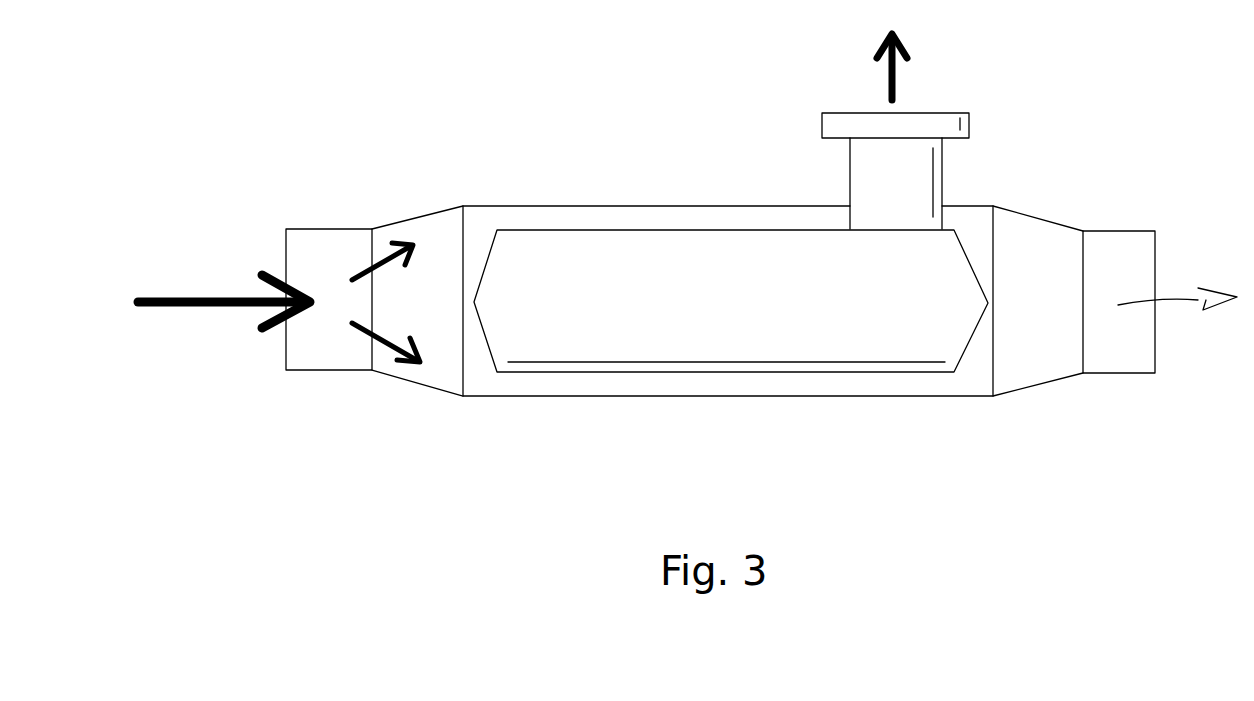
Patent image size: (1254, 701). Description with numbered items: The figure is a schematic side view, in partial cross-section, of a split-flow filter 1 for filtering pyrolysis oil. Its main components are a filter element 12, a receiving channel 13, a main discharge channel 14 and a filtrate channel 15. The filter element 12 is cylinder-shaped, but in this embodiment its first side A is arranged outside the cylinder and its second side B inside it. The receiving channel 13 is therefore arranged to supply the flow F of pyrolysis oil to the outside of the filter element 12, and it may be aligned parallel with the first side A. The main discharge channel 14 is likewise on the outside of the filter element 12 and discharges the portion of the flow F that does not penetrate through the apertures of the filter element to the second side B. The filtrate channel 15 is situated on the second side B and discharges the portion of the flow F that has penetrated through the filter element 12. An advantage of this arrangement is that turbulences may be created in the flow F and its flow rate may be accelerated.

The split-flow filter 1 is at (448, 494).
The filter element 12 is at (835, 342).
The receiving channel 13 is at (333, 250).
The main discharge channel 14 is at (1117, 255).
The filtrate channel 15 is at (866, 171).
The first side A is at (572, 215).
The second side B is at (609, 424).
The flow F is at (224, 281).